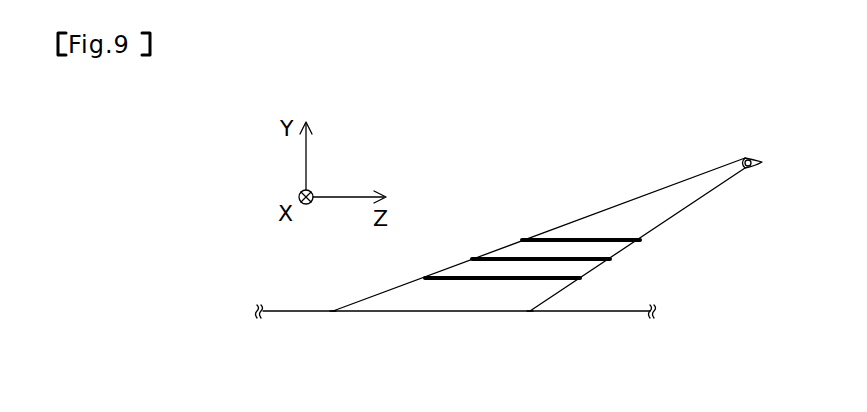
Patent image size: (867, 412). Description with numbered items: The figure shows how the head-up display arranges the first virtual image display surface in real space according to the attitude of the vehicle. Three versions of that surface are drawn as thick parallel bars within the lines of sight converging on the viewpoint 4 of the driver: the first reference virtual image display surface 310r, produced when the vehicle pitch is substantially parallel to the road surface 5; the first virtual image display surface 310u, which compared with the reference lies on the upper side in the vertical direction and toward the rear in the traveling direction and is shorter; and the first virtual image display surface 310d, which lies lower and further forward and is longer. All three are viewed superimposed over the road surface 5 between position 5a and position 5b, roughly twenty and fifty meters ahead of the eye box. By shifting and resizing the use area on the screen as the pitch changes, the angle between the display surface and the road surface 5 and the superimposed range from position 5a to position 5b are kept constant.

The viewpoint 4 is at (757, 160).
The road surface 5 is at (266, 310).
The position 5a is at (530, 311).
The position 5b is at (333, 311).
The first reference virtual image display surface 310r is at (545, 258).
The first virtual image display surface 310u is at (612, 256).
The first virtual image display surface 310d is at (540, 279).